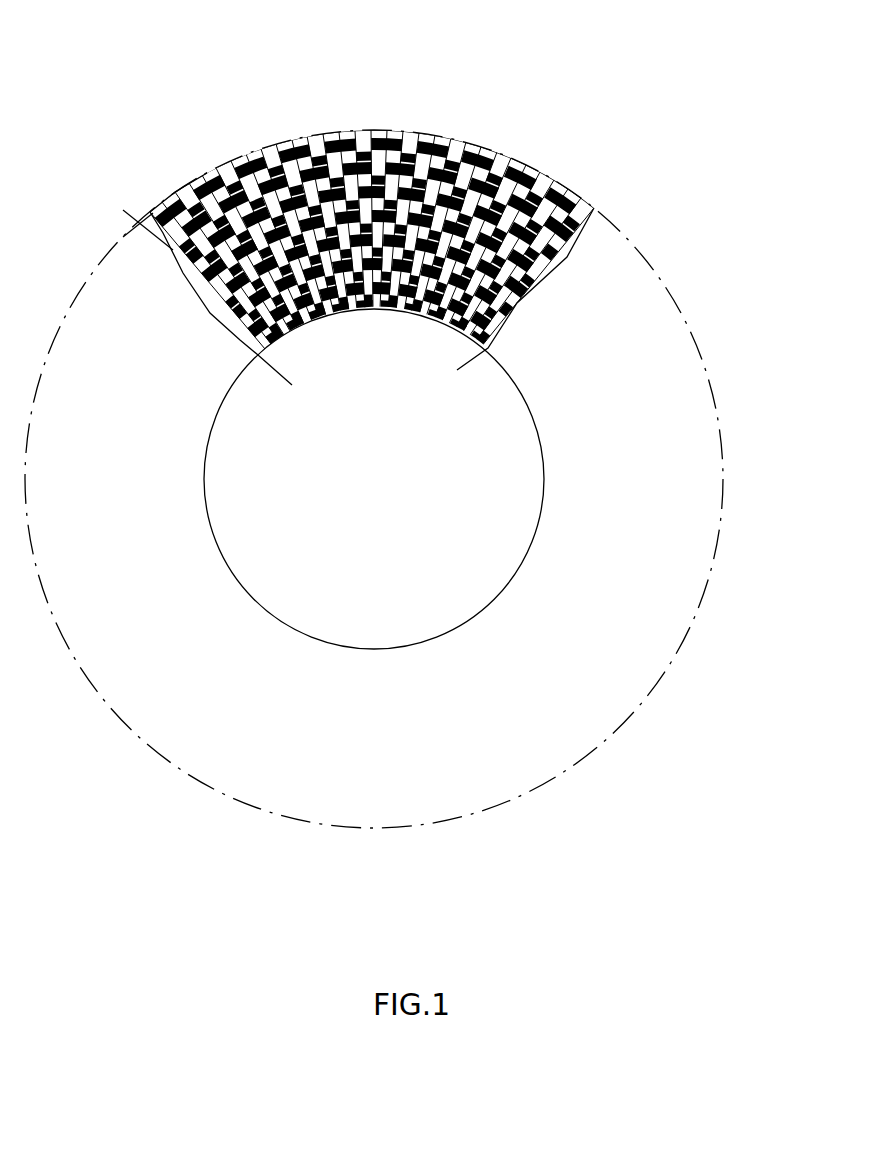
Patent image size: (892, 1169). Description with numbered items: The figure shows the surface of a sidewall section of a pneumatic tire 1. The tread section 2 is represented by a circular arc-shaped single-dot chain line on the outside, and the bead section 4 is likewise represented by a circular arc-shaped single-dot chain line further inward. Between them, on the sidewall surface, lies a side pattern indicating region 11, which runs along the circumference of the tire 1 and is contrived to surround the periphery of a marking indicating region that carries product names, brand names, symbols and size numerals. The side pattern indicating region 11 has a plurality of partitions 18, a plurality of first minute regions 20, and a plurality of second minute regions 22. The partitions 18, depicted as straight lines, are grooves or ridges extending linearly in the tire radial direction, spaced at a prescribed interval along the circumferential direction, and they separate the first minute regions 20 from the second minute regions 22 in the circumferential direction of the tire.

The pneumatic tire 1 is at (557, 67).
The tread section 2 is at (645, 253).
The bead section 4 is at (520, 388).
The side pattern indicating region 11 is at (378, 130).
The partitions 18 is at (160, 213).
The first minute regions 20 is at (163, 203).
The second minute regions 22 is at (160, 237).